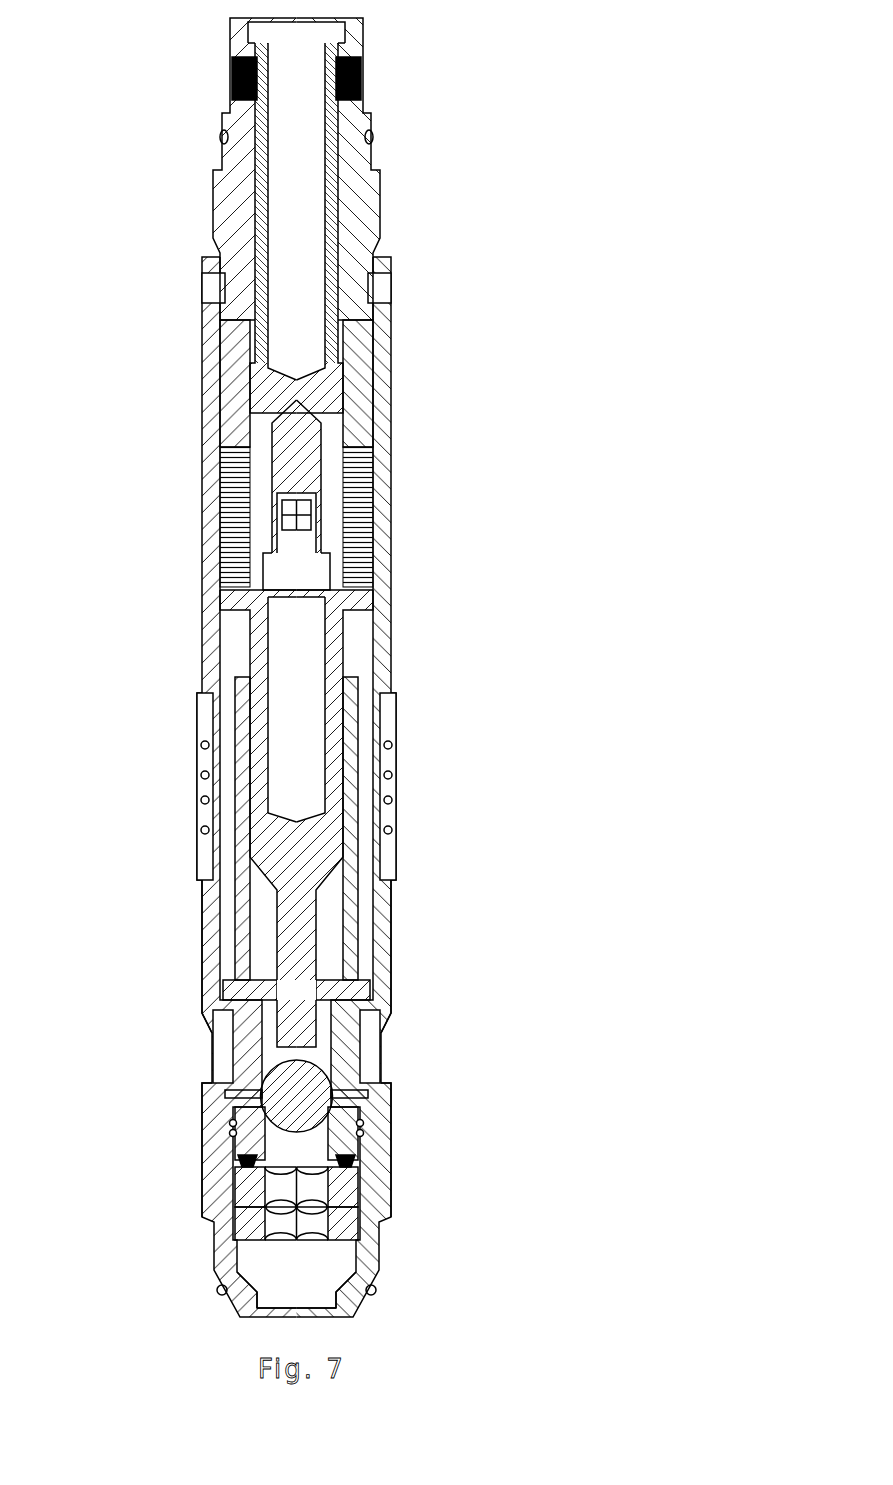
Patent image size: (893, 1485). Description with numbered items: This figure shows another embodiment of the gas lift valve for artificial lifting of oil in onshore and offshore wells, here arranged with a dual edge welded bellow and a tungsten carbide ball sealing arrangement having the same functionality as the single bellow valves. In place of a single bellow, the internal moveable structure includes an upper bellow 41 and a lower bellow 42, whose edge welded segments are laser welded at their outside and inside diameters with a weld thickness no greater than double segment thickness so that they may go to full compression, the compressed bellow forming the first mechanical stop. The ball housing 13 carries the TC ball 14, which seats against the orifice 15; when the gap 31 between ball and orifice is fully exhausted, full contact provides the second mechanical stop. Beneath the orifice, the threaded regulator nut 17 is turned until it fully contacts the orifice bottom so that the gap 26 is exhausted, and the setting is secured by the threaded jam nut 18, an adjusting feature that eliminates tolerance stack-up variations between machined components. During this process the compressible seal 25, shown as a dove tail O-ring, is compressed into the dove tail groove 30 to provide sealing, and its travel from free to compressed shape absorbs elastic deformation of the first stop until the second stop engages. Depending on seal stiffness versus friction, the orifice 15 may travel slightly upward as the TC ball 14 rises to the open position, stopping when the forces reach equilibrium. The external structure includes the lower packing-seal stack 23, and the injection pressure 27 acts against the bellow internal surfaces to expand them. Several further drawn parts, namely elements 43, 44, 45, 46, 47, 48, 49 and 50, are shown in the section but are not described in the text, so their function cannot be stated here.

The upper bellow 41 is at (376, 59).
The mandrel tube 46 is at (353, 190).
The top sub 47 is at (393, 205).
The spring sleeve 45 is at (345, 409).
The lower bellow 42 is at (374, 491).
The spring 43 is at (400, 576).
The housing 44 is at (358, 703).
The lower packing-seal stack 23 is at (402, 770).
The lower housing section 48 is at (399, 917).
The ball housing 13 is at (346, 1025).
The TC ball 14 is at (343, 1054).
The orifice 15 is at (367, 1097).
The dove tail groove 30 is at (371, 1144).
The threaded regulator nut 17 is at (372, 1173).
The threaded jam nut 18 is at (373, 1202).
The lower mandrel 50 is at (214, 586).
The injection pressure 27 is at (222, 1061).
The gap 31 is at (265, 1110).
The compressible seal 25 is at (233, 1147).
The gap 26 is at (237, 1165).
The outlet 49 is at (297, 1313).